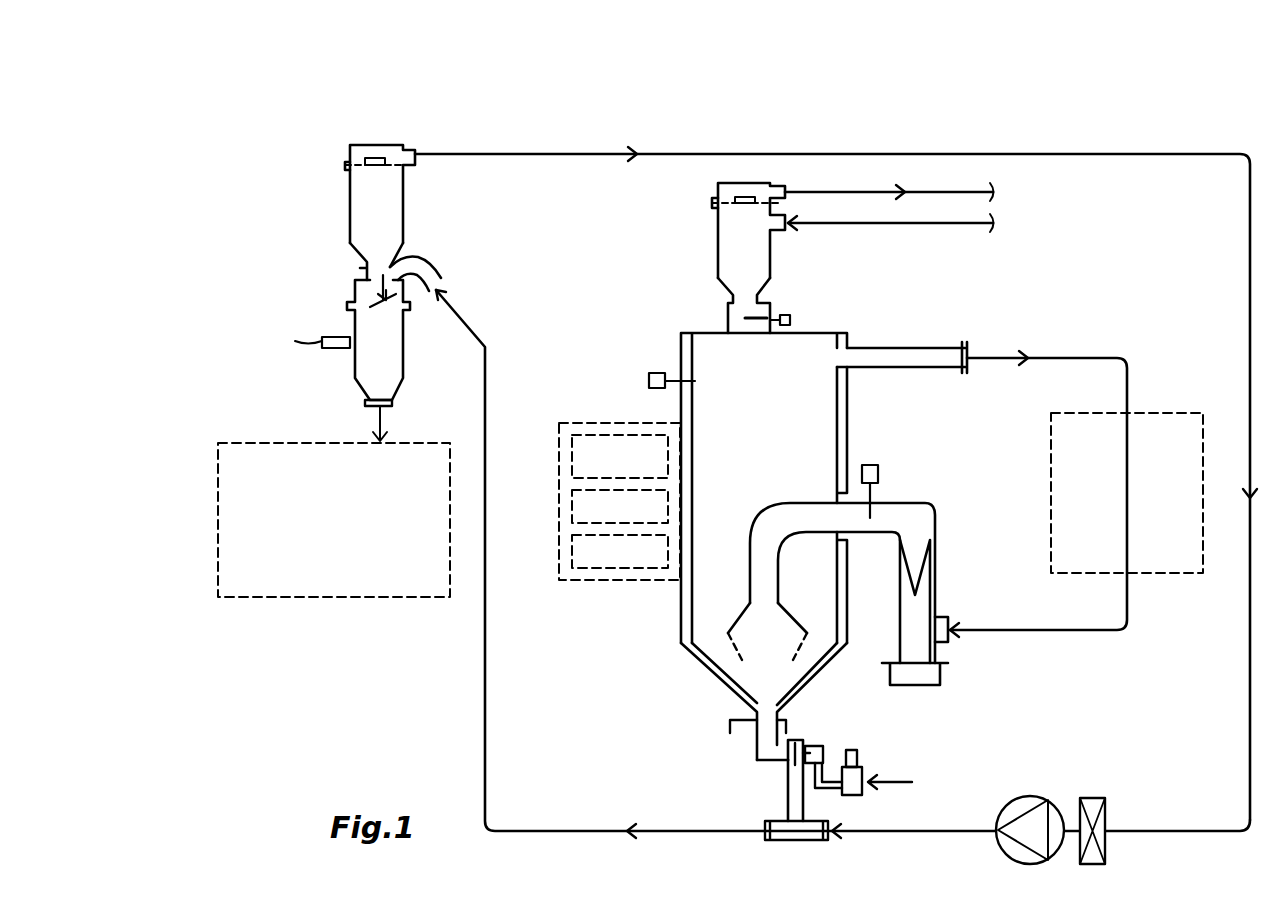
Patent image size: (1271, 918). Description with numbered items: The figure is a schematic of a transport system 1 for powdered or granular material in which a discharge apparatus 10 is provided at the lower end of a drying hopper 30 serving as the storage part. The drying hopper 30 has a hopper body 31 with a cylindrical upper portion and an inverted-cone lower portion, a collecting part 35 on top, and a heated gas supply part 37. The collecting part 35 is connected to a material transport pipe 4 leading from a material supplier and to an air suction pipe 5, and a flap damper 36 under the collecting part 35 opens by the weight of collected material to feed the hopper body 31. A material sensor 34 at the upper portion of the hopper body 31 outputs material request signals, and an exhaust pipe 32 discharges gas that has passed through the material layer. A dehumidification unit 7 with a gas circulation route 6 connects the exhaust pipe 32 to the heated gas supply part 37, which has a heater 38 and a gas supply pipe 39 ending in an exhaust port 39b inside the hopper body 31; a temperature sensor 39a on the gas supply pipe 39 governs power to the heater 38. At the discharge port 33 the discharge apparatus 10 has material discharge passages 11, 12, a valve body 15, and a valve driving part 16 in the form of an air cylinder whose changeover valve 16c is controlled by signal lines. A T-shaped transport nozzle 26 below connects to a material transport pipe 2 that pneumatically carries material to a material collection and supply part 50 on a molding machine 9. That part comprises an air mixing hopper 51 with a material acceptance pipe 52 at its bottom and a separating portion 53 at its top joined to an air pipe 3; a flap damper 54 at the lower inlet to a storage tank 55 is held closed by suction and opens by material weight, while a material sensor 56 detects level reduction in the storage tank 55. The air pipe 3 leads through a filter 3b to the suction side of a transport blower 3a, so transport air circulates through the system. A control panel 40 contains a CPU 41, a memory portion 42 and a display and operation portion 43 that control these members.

The transport system 1 is at (1184, 136).
The material transport pipe 2 is at (582, 834).
The air pipe 3 is at (1120, 158).
The transport blower 3a is at (1033, 796).
The filter 3b is at (1091, 797).
The material transport pipe 4 is at (903, 226).
The air suction pipe 5 is at (940, 191).
The gas circulation route 6 is at (1084, 357).
The dehumidification unit 7 is at (1152, 575).
The molding machine 9 is at (322, 599).
The discharge apparatus 10 is at (871, 749).
The material discharge passage 11 is at (762, 764).
The material discharge passage 12 is at (778, 764).
The valve body 15 is at (800, 745).
The valve driving part 16 is at (822, 752).
The changeover valve 16c is at (864, 789).
The transport nozzle 26 is at (795, 840).
The drying hopper 30 is at (658, 329).
The hopper body 31 is at (850, 411).
The exhaust pipe 32 is at (912, 369).
The discharge port 33 is at (758, 730).
The material sensor 34 is at (648, 382).
The collecting part 35 is at (718, 246).
The flap damper 36 is at (786, 318).
The heated gas supply part 37 is at (934, 519).
The heater 38 is at (931, 586).
The gas supply pipe 39 is at (796, 503).
The temperature sensor 39a is at (880, 473).
The exhaust port 39b is at (735, 636).
The control panel 40 is at (590, 582).
The CPU 41 is at (596, 433).
The memory portion 42 is at (572, 505).
The display and operation portion 43 is at (625, 583).
The material collection and supply part 50 is at (316, 247).
The air mixing hopper 51 is at (406, 193).
The material acceptance pipe 52 is at (429, 264).
The separating portion 53 is at (348, 153).
The flap damper 54 is at (386, 303).
The storage tank 55 is at (410, 362).
The material sensor 56 is at (332, 350).